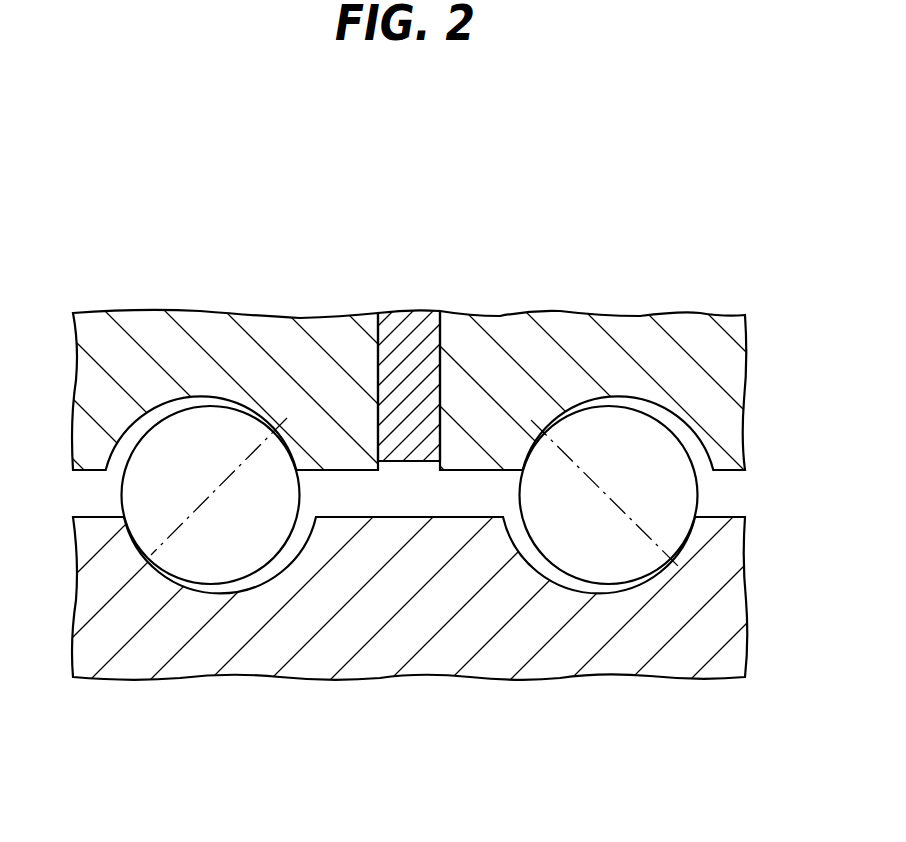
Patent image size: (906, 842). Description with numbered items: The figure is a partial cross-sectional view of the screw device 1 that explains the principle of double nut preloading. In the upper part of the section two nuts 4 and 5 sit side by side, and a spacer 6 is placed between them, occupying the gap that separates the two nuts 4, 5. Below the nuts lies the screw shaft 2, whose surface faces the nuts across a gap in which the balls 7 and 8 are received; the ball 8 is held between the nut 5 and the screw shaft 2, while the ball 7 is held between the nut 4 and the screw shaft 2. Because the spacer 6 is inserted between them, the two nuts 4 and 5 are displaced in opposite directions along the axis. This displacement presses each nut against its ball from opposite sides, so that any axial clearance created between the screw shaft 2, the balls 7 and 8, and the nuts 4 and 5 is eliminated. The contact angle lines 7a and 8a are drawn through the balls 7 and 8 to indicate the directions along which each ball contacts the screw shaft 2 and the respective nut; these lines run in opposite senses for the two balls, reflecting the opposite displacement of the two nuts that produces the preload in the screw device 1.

The screw device 1 is at (419, 116).
The screw shaft 2 is at (435, 660).
The nut 4 is at (587, 328).
The nut 5 is at (212, 330).
The spacer 6 is at (407, 332).
The ball 7 is at (578, 562).
The contact angle line 7a is at (642, 537).
The ball 8 is at (238, 562).
The contact angle line 8a is at (176, 535).